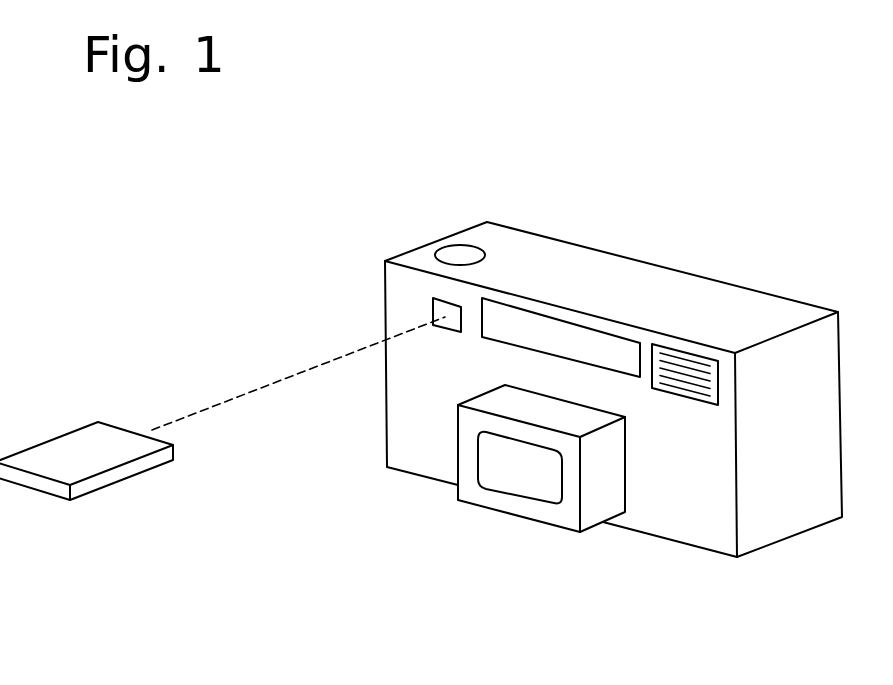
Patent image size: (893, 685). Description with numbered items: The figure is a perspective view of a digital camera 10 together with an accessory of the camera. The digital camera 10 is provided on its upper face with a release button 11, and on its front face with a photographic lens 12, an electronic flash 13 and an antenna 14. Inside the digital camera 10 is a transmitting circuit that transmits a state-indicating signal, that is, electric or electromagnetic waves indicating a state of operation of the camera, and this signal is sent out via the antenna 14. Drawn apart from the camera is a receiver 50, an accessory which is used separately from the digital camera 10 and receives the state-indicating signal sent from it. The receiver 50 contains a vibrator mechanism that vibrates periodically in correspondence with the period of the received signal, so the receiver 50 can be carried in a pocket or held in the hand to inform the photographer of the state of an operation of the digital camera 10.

The digital camera 10 is at (615, 287).
The release button 11 is at (462, 252).
The photographic lens 12 is at (567, 515).
The electronic flash 13 is at (683, 383).
The antenna 14 is at (435, 312).
The receiver 50 is at (78, 453).